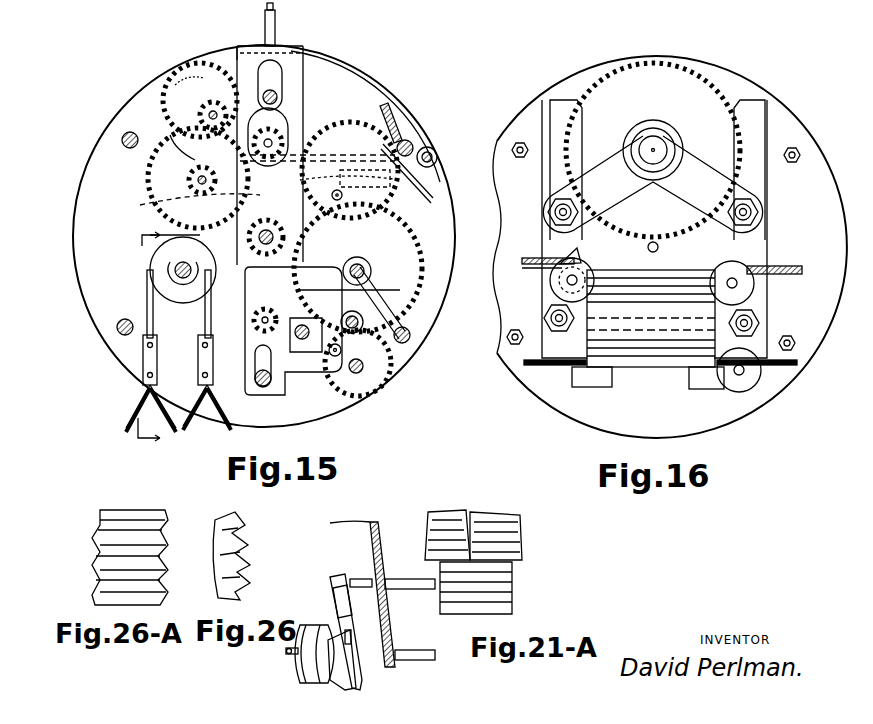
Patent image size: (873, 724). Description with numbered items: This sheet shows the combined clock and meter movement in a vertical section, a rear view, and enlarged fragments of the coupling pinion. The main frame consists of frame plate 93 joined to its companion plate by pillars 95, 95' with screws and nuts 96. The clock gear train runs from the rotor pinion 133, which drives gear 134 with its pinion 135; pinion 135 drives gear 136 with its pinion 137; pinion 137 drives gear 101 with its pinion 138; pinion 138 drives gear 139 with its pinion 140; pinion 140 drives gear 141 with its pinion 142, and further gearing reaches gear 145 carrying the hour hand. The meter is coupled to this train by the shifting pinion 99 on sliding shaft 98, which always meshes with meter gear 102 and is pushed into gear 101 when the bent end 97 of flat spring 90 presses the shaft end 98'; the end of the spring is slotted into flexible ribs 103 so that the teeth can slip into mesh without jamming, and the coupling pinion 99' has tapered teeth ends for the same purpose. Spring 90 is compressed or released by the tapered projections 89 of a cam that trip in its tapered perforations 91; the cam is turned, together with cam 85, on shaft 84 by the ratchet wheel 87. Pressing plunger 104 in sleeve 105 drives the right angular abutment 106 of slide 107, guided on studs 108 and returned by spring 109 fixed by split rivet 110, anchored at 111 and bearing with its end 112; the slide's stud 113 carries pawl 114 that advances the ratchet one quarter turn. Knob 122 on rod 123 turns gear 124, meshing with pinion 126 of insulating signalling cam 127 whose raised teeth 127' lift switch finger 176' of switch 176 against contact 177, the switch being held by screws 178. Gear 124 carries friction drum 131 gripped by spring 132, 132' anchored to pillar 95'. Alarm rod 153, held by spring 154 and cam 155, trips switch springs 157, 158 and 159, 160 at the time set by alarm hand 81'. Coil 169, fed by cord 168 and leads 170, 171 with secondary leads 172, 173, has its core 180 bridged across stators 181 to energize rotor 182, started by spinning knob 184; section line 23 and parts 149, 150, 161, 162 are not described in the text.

In FIG. 15, the section line 23 is at (145, 337).
In FIG. 16, the alarm hand 81' is at (578, 247).
In FIG. 15, the shaft 84 is at (310, 345).
In FIG. 21-A, the shaft 84 is at (428, 643).
In FIG. 21-A, the cam 85 is at (302, 660).
In FIG. 15, the ratchet wheel 87 is at (300, 340).
In FIG. 21-A, the tapered projections 89 is at (336, 682).
In FIG. 21-A, the flat spring 90 is at (352, 686).
In FIG. 21-A, the tapered perforations 91 is at (350, 640).
In FIG. 15, the frame plate 93 is at (94, 162).
In FIG. 21-A, the frame plate 93 is at (392, 668).
In FIG. 15, the pillar 95 is at (107, 238).
In FIG. 16, the pillar 95 is at (660, 362).
In FIG. 15, the pillar 95' is at (425, 336).
In FIG. 16, the screws and nuts 96 is at (798, 150).
In FIG. 21-A, the spring end 97 is at (337, 576).
In FIG. 21-A, the shaft 98 is at (410, 569).
In FIG. 21-A, the shaft end 98' is at (358, 569).
In FIG. 21-A, the pinion 99 is at (513, 617).
In FIG. 26-A, the coupling pinion 99' is at (150, 553).
In FIG. 26, the coupling pinion 99' is at (227, 556).
In FIG. 21-A, the coupling pinion 99' is at (493, 588).
In FIG. 15, the gear 101 is at (196, 185).
In FIG. 21-A, the gear 101 is at (498, 520).
In FIG. 21-A, the gear 102 is at (452, 518).
In FIG. 21-A, the flexible ribs 103 is at (337, 600).
In FIG. 15, the plunger 104 is at (276, 16).
In FIG. 15, the sleeve 105 is at (282, 50).
In FIG. 15, the right angular abutment 106 is at (292, 80).
In FIG. 15, the slide 107 is at (278, 98).
In FIG. 15, the studs 108 is at (263, 386).
In FIG. 15, the spring 109 is at (392, 104).
In FIG. 15, the split rivet 110 is at (433, 151).
In FIG. 15, the anchor point 111 is at (443, 183).
In FIG. 15, the spring end 112 is at (236, 46).
In FIG. 15, the stud 113 is at (345, 350).
In FIG. 15, the pawl 114 is at (352, 340).
In FIG. 16, the knob 122 is at (747, 293).
In FIG. 15, the rod 123 is at (380, 240).
In FIG. 16, the rod 123 is at (742, 280).
In FIG. 15, the gear 124 is at (400, 262).
In FIG. 15, the pinion 126 is at (150, 200).
In FIG. 15, the insulating signalling cam 127 is at (182, 204).
In FIG. 15, the raised teeth 127' is at (350, 181).
In FIG. 15, the friction drum 131 is at (360, 218).
In FIG. 15, the friction spring 132 is at (373, 268).
In FIG. 15, the spring 132' is at (380, 296).
In FIG. 15, the rotor pinion 133 is at (290, 140).
In FIG. 15, the gear 134 is at (200, 65).
In FIG. 15, the pinion 135 is at (205, 105).
In FIG. 15, the gear 136 is at (188, 118).
In FIG. 15, the pinion 137 is at (196, 170).
In FIG. 15, the pinion 138 is at (150, 229).
In FIG. 15, the gear 139 is at (412, 140).
In FIG. 15, the pinion 140 is at (444, 200).
In FIG. 15, the gear 141 is at (330, 200).
In FIG. 15, the pinion 142 is at (185, 238).
In FIG. 15, the gear 145 is at (380, 338).
In FIG. 16, the disc 149 is at (752, 378).
In FIG. 16, the roller 150 is at (730, 380).
In FIG. 15, the rod 153 is at (183, 278).
In FIG. 16, the rod 153 is at (576, 275).
In FIG. 15, the spring 154 is at (150, 272).
In FIG. 15, the cam 155 is at (175, 257).
In FIG. 15, the switch spring 157 is at (147, 293).
In FIG. 15, the switch contact 158 is at (147, 308).
In FIG. 15, the switch spring 159 is at (205, 326).
In FIG. 15, the switch contact 160 is at (198, 342).
In FIG. 15, the pins 161 is at (203, 348).
In FIG. 15, the prongs 162 is at (178, 408).
In FIG. 16, the connecting cord 168 is at (782, 266).
In FIG. 16, the coil 169 is at (646, 368).
In FIG. 16, the lead 170 is at (532, 258).
In FIG. 16, the lead 171 is at (554, 272).
In FIG. 16, the secondary lead 172 is at (547, 366).
In FIG. 16, the secondary lead 173 is at (792, 366).
In FIG. 15, the switch 176 is at (317, 146).
In FIG. 15, the switch finger 176' is at (215, 151).
In FIG. 15, the contact 177 is at (340, 125).
In FIG. 15, the screws 178 is at (409, 176).
In FIG. 16, the core 180 is at (544, 310).
In FIG. 16, the stators 181 is at (568, 108).
In FIG. 16, the rotor 182 is at (690, 92).
In FIG. 16, the knob 184 is at (660, 148).